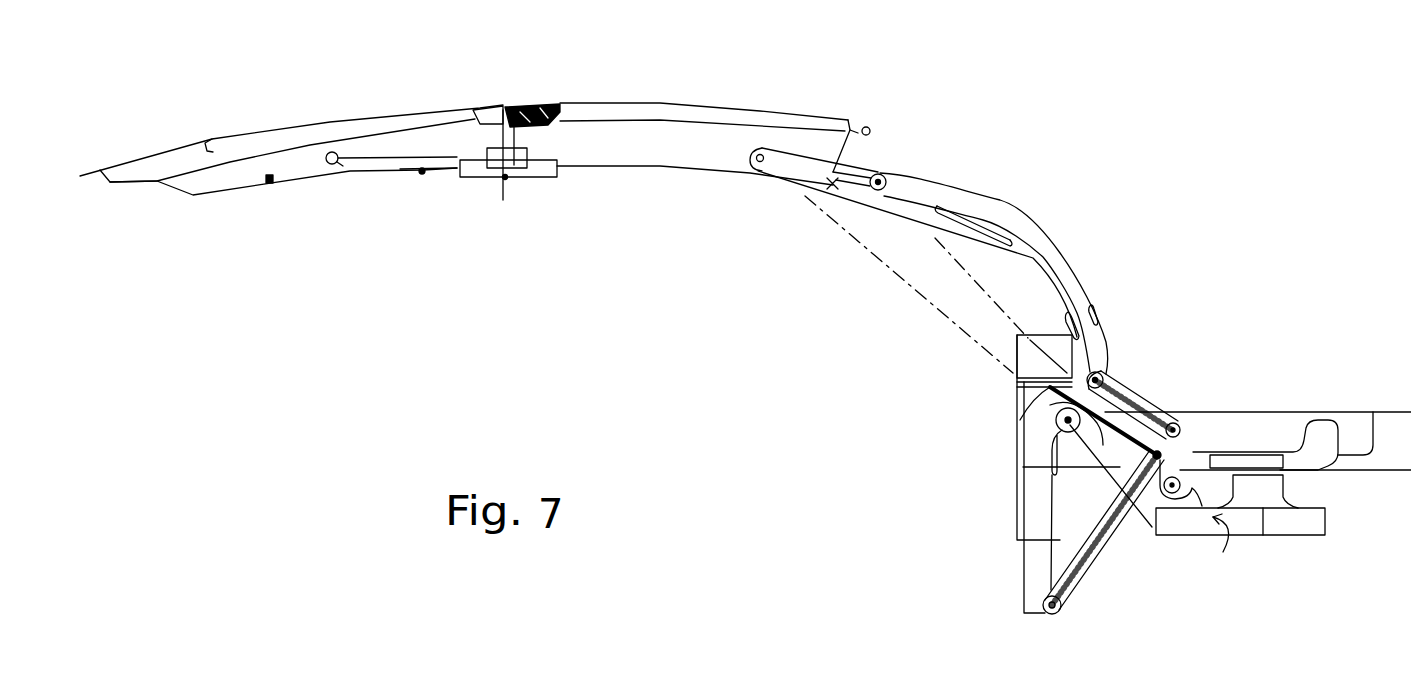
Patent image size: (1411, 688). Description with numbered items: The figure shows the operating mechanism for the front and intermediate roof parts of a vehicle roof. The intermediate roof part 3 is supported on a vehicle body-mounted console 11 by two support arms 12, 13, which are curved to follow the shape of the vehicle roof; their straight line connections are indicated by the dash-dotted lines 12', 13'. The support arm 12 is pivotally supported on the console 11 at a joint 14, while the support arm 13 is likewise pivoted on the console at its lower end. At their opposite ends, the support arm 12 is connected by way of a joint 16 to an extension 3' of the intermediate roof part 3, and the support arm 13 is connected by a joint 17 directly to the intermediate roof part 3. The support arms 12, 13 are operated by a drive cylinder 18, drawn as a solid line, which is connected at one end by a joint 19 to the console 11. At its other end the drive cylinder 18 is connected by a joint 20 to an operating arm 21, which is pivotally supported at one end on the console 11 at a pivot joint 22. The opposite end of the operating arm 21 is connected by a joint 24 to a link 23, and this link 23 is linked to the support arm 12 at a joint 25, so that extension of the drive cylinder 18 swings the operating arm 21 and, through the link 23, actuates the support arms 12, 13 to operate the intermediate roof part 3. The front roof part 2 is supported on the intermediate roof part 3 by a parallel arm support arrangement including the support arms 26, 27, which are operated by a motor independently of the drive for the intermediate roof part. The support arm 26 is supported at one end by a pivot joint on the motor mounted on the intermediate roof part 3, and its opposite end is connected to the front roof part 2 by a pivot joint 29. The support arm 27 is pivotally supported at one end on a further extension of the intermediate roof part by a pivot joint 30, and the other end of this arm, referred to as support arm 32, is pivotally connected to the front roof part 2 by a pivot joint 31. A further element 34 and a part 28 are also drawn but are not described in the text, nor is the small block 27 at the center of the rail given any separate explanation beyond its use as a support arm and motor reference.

The front roof part 2 is at (337, 122).
The intermediate roof part 3 is at (464, 101).
The extension of the intermediate roof part 3' is at (865, 126).
The support arm 26 is at (383, 158).
The rail lower profile 34 is at (443, 167).
The pivot joint 31 is at (269, 183).
The support arm 32 is at (330, 169).
The pivot joint 29 is at (338, 163).
The pivot joint 30 is at (423, 172).
The support arm 27 is at (505, 178).
The bracket 28 is at (514, 168).
The joint 17 is at (750, 170).
The joint 16 is at (887, 172).
The support arm 13 is at (917, 272).
The dash-dotted line 13' is at (909, 284).
The support arm 12 is at (994, 270).
The dash-dotted line 12' is at (974, 191).
The joint 19 is at (1017, 412).
The drive cylinder 18 is at (1090, 456).
The joint 25 is at (1103, 370).
The link 23 is at (1133, 403).
The joint 24 is at (1180, 417).
The joint 20 is at (1090, 456).
The joint 14 is at (1172, 493).
The operating arm 21 is at (1093, 570).
The pivot joint 22 is at (1058, 612).
The console 11 is at (1237, 387).